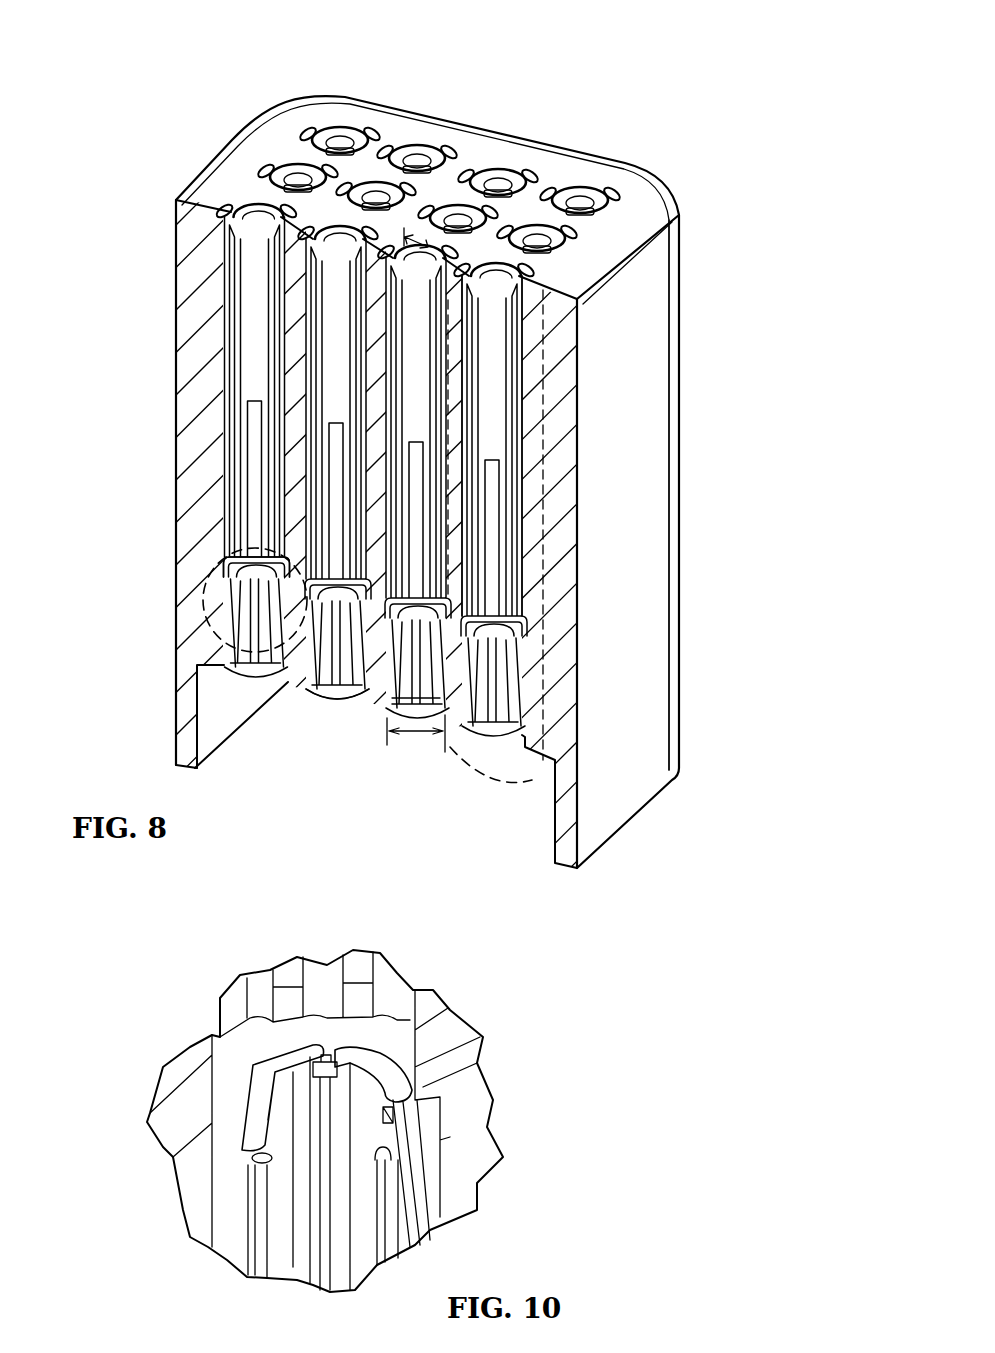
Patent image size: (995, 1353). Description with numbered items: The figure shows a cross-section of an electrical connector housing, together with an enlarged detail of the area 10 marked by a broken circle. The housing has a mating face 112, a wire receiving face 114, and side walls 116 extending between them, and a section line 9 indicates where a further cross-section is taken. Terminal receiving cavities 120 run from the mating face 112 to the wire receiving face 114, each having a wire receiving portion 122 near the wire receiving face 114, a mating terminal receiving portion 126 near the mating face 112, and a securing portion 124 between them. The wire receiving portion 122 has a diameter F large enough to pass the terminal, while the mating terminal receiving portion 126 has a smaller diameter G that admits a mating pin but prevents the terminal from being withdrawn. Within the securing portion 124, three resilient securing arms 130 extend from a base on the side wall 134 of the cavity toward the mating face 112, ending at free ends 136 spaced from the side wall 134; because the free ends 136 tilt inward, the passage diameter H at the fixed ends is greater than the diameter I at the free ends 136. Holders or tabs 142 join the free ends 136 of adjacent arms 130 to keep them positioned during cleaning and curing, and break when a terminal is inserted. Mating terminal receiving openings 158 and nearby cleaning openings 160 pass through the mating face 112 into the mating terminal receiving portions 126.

In FIG. 8, the section line 9 is at (547, 553).
In FIG. 8, the area 10 is at (222, 560).
In FIG. 8, the mating face 112 is at (565, 165).
In FIG. 8, the wire receiving face 114 is at (540, 765).
In FIG. 8, the side walls 116 is at (622, 504).
In FIG. 8, the terminal receiving cavity 120 is at (495, 435).
In FIG. 8, the wire receiving portion 122 is at (506, 723).
In FIG. 8, the securing portion 124 is at (530, 648).
In FIG. 8, the mating terminal receiving portion 126 is at (493, 318).
In FIG. 8, the resilient securing arms 130 is at (303, 660).
In FIG. 10, the resilient securing arms 130 is at (367, 1183).
In FIG. 10, the side wall of the terminal receiving cavity 134 is at (230, 1185).
In FIG. 8, the free ends 136 is at (246, 590).
In FIG. 10, the free ends 136 is at (260, 1083).
In FIG. 10, the holders or tabs 142 is at (327, 1040).
In FIG. 8, the mating terminal receiving openings 158 is at (341, 138).
In FIG. 8, the cleaning openings 160 is at (461, 162).
In FIG. 8, the diameter of mating terminal receiving portion G is at (410, 236).
In FIG. 8, the diameter of passage formed by fixed ends H is at (362, 688).
In FIG. 8, the diameter of passage formed by free ends I is at (385, 680).
In FIG. 8, the diameter of wire receiving portion F is at (418, 745).